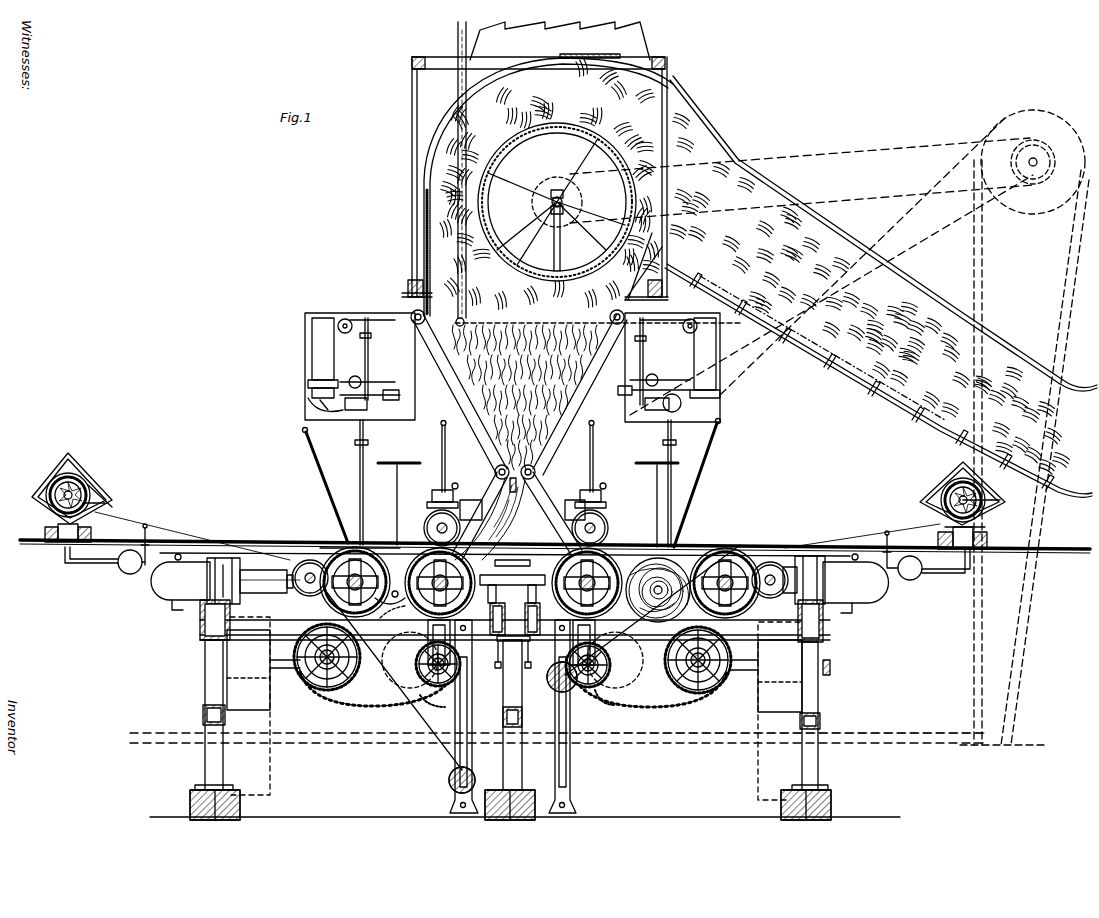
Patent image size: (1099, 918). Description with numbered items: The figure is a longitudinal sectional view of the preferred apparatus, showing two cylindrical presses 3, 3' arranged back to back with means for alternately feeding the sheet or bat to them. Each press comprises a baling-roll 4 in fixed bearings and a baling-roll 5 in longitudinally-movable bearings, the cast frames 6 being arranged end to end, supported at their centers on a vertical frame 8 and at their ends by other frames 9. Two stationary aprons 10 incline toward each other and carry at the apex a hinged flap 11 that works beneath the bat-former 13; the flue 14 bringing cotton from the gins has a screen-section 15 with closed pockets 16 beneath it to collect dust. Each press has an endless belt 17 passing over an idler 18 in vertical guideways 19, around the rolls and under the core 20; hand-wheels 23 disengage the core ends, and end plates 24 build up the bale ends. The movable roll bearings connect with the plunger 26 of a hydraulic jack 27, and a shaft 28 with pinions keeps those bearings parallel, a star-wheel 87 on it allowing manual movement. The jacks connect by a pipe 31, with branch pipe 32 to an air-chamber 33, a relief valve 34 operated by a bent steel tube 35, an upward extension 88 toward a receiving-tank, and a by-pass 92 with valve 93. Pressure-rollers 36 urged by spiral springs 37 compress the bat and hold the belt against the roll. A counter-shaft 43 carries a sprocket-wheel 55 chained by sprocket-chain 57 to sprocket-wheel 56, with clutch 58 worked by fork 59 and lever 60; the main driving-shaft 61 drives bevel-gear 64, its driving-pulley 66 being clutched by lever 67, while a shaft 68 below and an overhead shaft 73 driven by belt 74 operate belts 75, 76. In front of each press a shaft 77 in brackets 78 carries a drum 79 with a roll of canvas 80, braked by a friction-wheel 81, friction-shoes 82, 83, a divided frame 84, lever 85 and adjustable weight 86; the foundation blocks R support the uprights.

The press 3 is at (361, 553).
The press 3' is at (658, 584).
The baling-roll 4 is at (475, 582).
The baling-roll 5 is at (766, 607).
The cast frame 6 is at (228, 610).
The vertical frame 8 is at (505, 640).
The frame 9 is at (512, 715).
The stationary apron 10 is at (518, 516).
The hinged flap 11 is at (518, 495).
The bat-former 13 is at (585, 268).
The flue 14 is at (882, 275).
The screen-section 15 is at (705, 290).
The closed pocket 16 is at (800, 355).
The endless belt 17 is at (428, 760).
The idler 18 is at (475, 778).
The vertical guideway 19 is at (470, 715).
The core 20 is at (392, 602).
The hand-wheel 23 is at (528, 496).
The end plate 24 is at (395, 620).
The plunger 26 is at (270, 581).
The hydraulic jack 27 is at (519, 583).
The shaft 28 is at (785, 565).
The pipe 31 is at (362, 470).
The branch pipe 32 is at (340, 412).
The air-chamber 33 is at (316, 349).
The valve 34 is at (362, 380).
The bent steel tube 35 is at (690, 428).
The pressure-roller 36 is at (428, 526).
The spiral spring 37 is at (310, 587).
The counter-shaft 43 is at (445, 708).
The sprocket-wheel 55 is at (515, 664).
The sprocket-wheel 56 is at (715, 698).
The sprocket-chain 57 is at (365, 706).
The clutch 58 is at (462, 675).
The fork 59 is at (438, 630).
The lever 60 is at (442, 448).
The main driving-shaft 61 is at (293, 668).
The bevel-gear 64 is at (607, 708).
The driving-pulley 66 is at (514, 708).
The lever 67 is at (517, 483).
The shaft 68 is at (772, 722).
The shaft 73 is at (1036, 160).
The belt 74 is at (978, 310).
The belt 75 is at (863, 154).
The belt 76 is at (880, 232).
The shaft 77 is at (100, 503).
The bracket 78 is at (985, 526).
The drum 79 is at (958, 486).
The roll of canvas 80 is at (960, 478).
The friction-wheel 81 is at (98, 500).
The friction-shoe 82 is at (90, 465).
The friction-shoe 83 is at (1040, 502).
The divided frame 84 is at (88, 480).
The lever 85 is at (517, 565).
The adjustable weight 86 is at (522, 558).
The star-wheel 87 is at (770, 560).
The upward extension of pipe 88 is at (452, 174).
The by-pass 92 is at (395, 370).
The valve 93 is at (405, 396).
The base block R is at (523, 805).